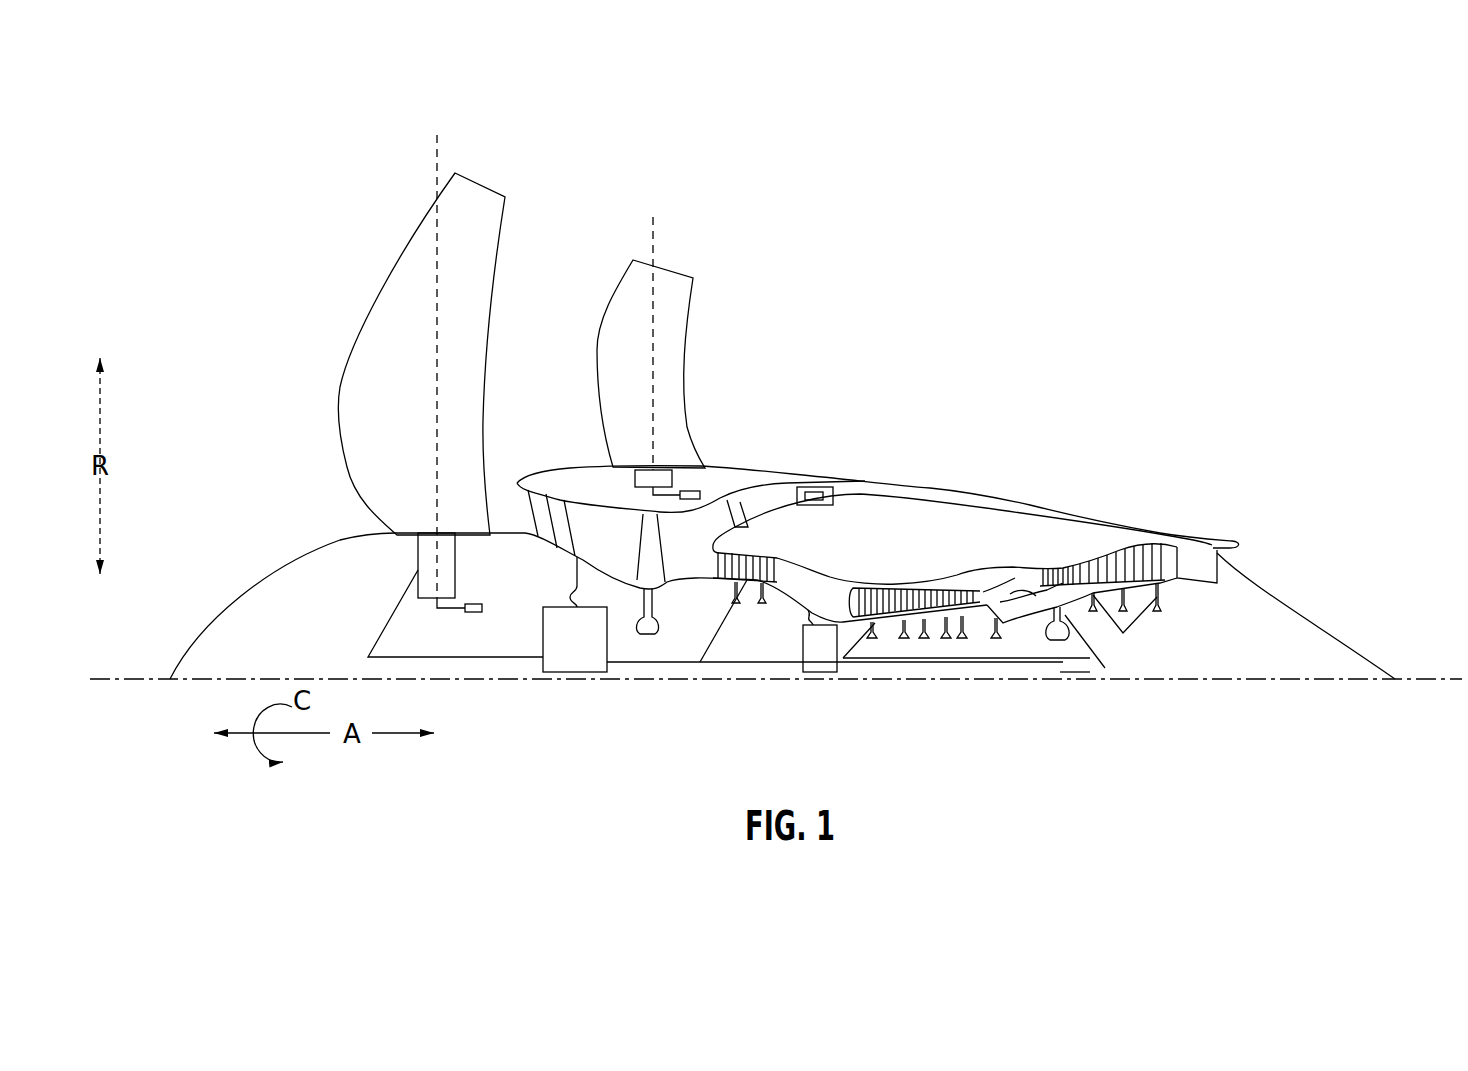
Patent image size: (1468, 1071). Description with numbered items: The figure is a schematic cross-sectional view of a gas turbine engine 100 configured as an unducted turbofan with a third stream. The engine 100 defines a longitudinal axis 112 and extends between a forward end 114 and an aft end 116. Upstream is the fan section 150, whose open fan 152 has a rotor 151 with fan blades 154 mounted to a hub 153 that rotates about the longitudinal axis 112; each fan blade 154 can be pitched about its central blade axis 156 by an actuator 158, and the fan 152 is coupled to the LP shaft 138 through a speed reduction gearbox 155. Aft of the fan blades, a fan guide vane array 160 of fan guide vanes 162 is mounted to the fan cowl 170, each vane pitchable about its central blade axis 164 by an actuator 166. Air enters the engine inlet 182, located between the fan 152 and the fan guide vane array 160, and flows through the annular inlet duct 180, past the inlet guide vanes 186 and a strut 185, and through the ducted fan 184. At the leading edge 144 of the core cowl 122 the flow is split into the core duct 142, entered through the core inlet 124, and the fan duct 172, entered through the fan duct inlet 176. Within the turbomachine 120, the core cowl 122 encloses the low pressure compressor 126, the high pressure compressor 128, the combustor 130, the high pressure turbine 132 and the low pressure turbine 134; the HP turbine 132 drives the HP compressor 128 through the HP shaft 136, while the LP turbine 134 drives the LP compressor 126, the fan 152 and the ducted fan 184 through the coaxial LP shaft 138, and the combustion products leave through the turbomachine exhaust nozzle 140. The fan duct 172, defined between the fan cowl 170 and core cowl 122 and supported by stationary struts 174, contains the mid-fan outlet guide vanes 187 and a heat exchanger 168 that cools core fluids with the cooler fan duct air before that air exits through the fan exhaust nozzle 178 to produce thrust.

The gas turbine engine 100 is at (860, 197).
The longitudinal axis 112 is at (1426, 686).
The forward end 114 is at (170, 678).
The aft end 116 is at (1400, 678).
The turbomachine 120 is at (956, 574).
The core cowl 122 is at (938, 497).
The core inlet 124 is at (706, 570).
The low pressure compressor 126 is at (752, 600).
The high pressure compressor 128 is at (937, 630).
The combustor 130 is at (1001, 608).
The high pressure turbine 132 is at (1065, 562).
The low pressure turbine 134 is at (1140, 540).
The high pressure shaft 136 is at (1090, 648).
The low pressure shaft 138 is at (390, 626).
The turbomachine exhaust nozzle 140 is at (1202, 562).
The core duct 142 is at (1019, 580).
The leading edge of the core cowl 144 is at (723, 550).
The fan section 150 is at (194, 280).
The rotor 151 is at (224, 602).
The open fan 152 is at (284, 404).
The hub 153 is at (286, 592).
The fan blade 154 is at (372, 300).
The speed reduction gearbox 155 is at (577, 665).
The central blade axis 156 is at (440, 148).
The actuator 158 is at (472, 612).
The fan guide vane array 160 is at (584, 335).
The fan guide vane 162 is at (680, 355).
The central blade axis 164 is at (660, 252).
The actuator 166 is at (688, 490).
The heat exchanger 168 is at (802, 487).
The fan cowl 170 is at (742, 480).
The fan duct 172 is at (786, 494).
The stationary strut 174 is at (836, 494).
The fan duct inlet 176 is at (703, 530).
The fan exhaust nozzle 178 is at (925, 484).
The inlet duct 180 is at (627, 558).
The engine inlet 182 is at (518, 511).
The ducted fan 184 is at (645, 528).
The strut 185 is at (572, 542).
The inlet guide vane 186 is at (528, 478).
The mid-fan outlet guide vane 187 is at (729, 504).